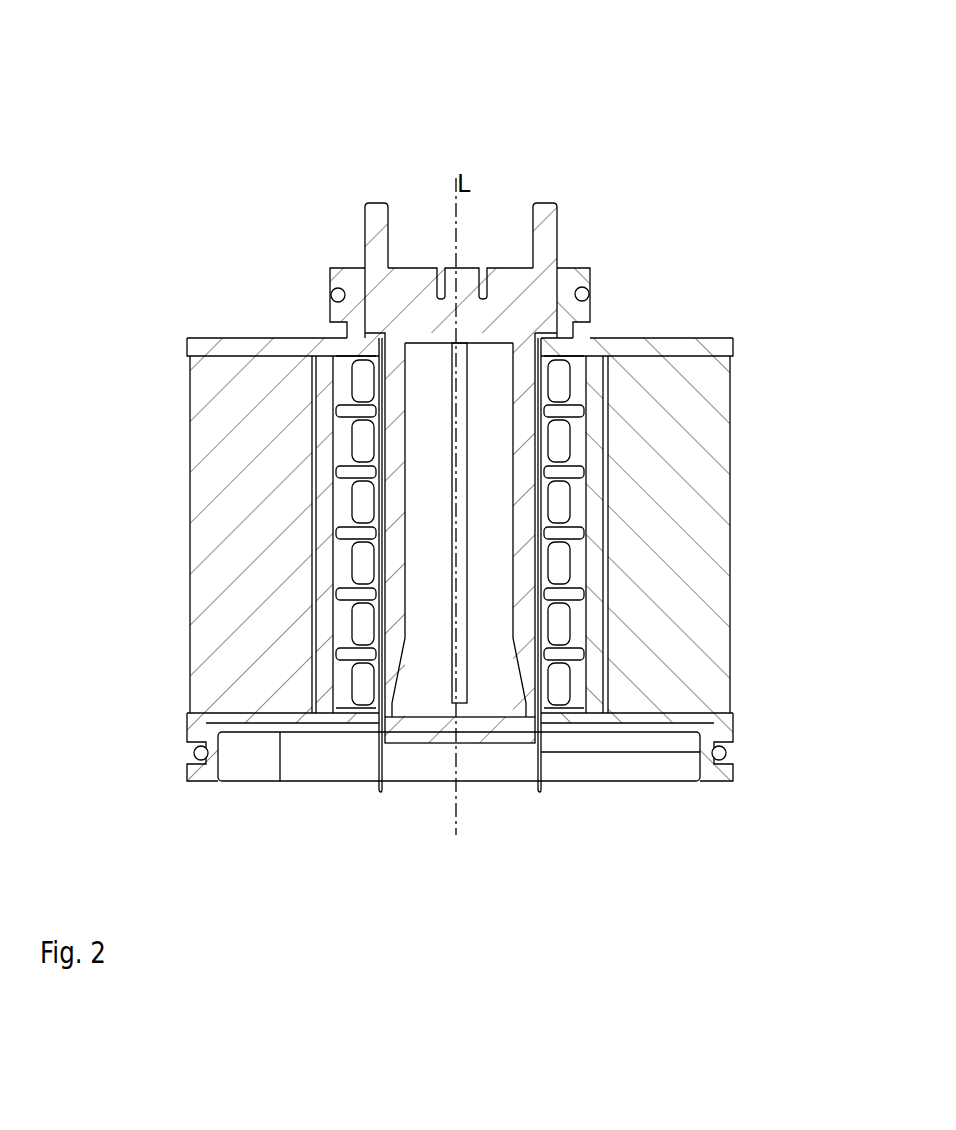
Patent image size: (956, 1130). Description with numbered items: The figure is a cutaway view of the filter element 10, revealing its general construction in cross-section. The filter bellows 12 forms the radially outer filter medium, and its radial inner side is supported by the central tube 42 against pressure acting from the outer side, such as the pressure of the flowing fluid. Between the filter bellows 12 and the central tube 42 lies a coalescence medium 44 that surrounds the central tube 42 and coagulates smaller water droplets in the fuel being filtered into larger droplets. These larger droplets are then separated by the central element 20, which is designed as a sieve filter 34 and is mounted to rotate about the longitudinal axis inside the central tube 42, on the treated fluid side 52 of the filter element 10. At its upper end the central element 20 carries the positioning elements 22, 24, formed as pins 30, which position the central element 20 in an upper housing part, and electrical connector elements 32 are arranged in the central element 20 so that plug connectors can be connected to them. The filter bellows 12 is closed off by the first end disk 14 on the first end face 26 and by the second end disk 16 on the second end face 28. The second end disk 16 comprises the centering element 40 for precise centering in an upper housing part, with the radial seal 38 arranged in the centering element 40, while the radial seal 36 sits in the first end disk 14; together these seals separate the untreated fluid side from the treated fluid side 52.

The filter element 10 is at (194, 94).
The filter bellows 12 is at (201, 498).
The first end disk 14 is at (200, 773).
The second end disk 16 is at (212, 338).
The central element 20 is at (518, 417).
The positioning element 22 is at (364, 238).
The positioning element 24 is at (549, 238).
The first end face 26 is at (254, 810).
The second end face 28 is at (274, 326).
The pins 30 is at (447, 250).
The electrical connector elements 32 is at (439, 293).
The sieve filter 34 is at (461, 538).
The radial seal 36 is at (718, 753).
The radial seal 38 is at (586, 296).
The centering element 40 is at (578, 280).
The central tube 42 is at (553, 476).
The coalescence medium 44 is at (594, 660).
The treated fluid side 52 is at (503, 531).